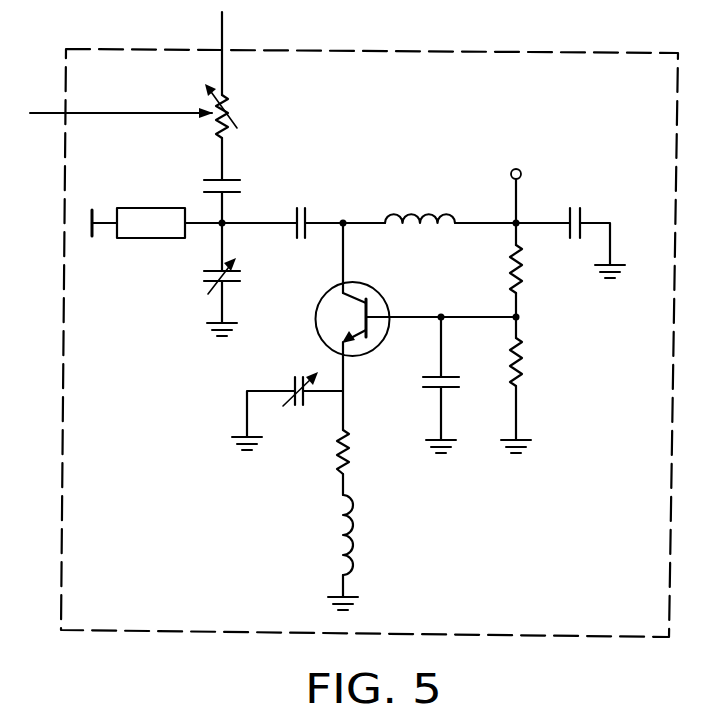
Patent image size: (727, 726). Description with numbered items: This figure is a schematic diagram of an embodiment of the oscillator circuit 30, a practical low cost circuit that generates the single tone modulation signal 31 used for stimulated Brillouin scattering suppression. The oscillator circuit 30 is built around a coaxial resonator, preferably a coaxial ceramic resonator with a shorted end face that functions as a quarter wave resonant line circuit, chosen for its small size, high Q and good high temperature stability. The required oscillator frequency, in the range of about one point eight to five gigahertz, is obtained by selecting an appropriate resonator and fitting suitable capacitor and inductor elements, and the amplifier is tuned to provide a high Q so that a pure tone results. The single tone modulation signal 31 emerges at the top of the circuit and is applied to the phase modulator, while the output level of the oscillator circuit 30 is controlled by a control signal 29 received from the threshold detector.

The control signal 29 is at (50, 112).
The oscillator circuit 30 is at (600, 97).
The single tone modulation signal 31 is at (229, 31).